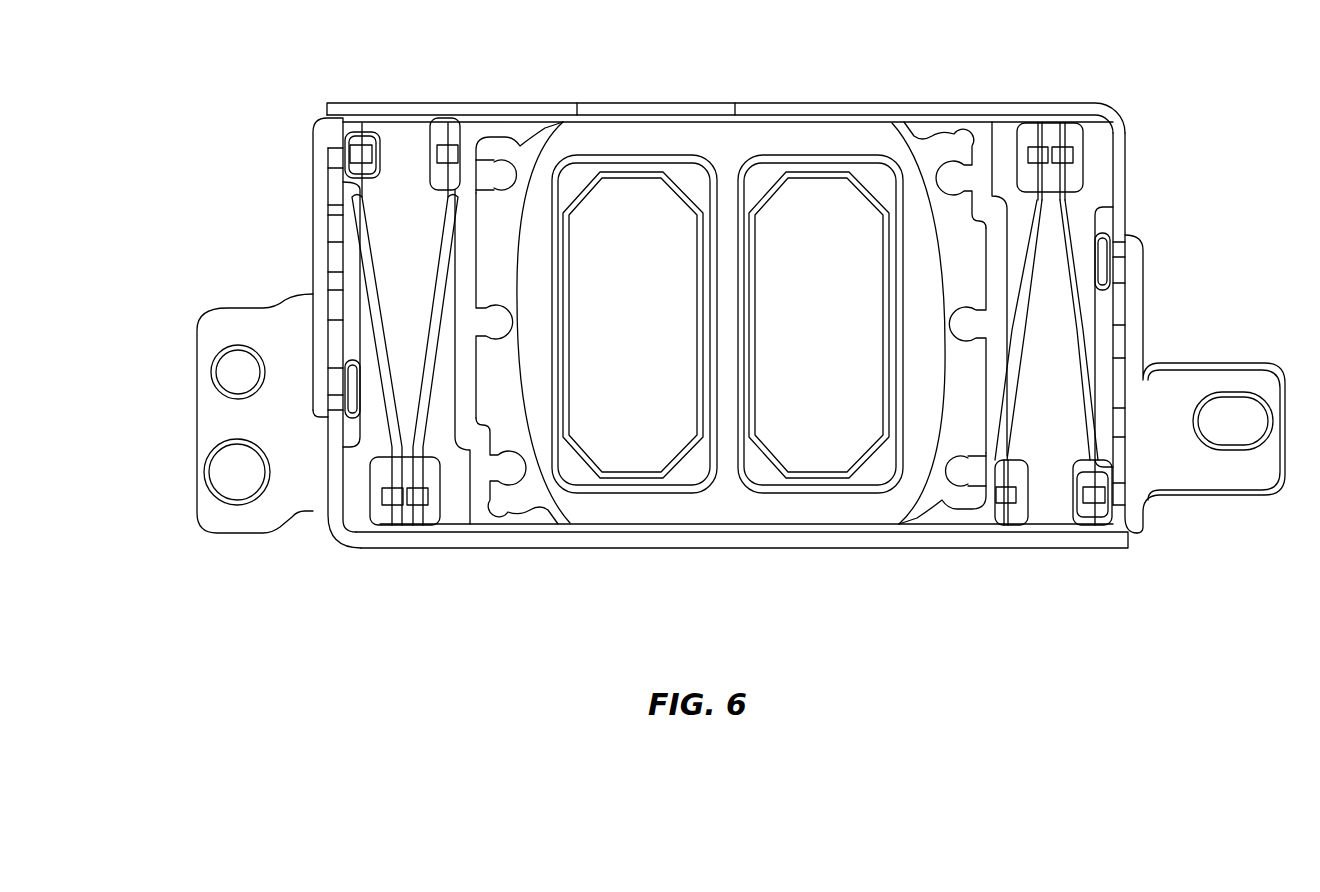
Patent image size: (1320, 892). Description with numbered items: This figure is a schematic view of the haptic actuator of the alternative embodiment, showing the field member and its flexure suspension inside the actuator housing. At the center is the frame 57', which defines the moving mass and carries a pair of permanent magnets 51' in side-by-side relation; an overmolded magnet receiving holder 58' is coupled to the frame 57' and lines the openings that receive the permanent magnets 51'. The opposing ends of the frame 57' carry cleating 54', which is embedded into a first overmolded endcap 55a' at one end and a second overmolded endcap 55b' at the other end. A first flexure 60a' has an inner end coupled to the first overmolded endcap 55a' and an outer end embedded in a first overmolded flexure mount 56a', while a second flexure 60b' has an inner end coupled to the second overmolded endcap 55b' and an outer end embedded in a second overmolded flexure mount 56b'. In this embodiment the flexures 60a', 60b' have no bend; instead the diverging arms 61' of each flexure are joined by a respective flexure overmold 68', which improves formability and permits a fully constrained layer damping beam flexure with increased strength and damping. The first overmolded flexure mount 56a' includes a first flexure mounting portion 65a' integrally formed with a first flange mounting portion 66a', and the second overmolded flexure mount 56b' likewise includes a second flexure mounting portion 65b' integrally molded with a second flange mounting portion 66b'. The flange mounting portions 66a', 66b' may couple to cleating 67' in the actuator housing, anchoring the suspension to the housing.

The permanent magnets 51' is at (726, 322).
The cleating 54' is at (734, 337).
The first overmolded endcap 55a' is at (517, 513).
The second overmolded endcap 55b' is at (942, 283).
The first overmolded flexure mount 56a' is at (672, 304).
The second overmolded flexure mount 56b' is at (789, 375).
The frame 57' is at (731, 369).
The overmolded magnet receiving holder 58' is at (727, 263).
The first flexure 60a' is at (376, 357).
The second flexure 60b' is at (1027, 133).
The diverging arms 61' is at (725, 330).
The first flexure mounting portion 65a' is at (277, 314).
The second flexure mounting portion 65b' is at (1158, 327).
The first flange mounting portion 66a' is at (212, 413).
The second flange mounting portion 66b' is at (1205, 401).
The cleating 67' is at (710, 326).
The flexure overmold 68' is at (728, 326).